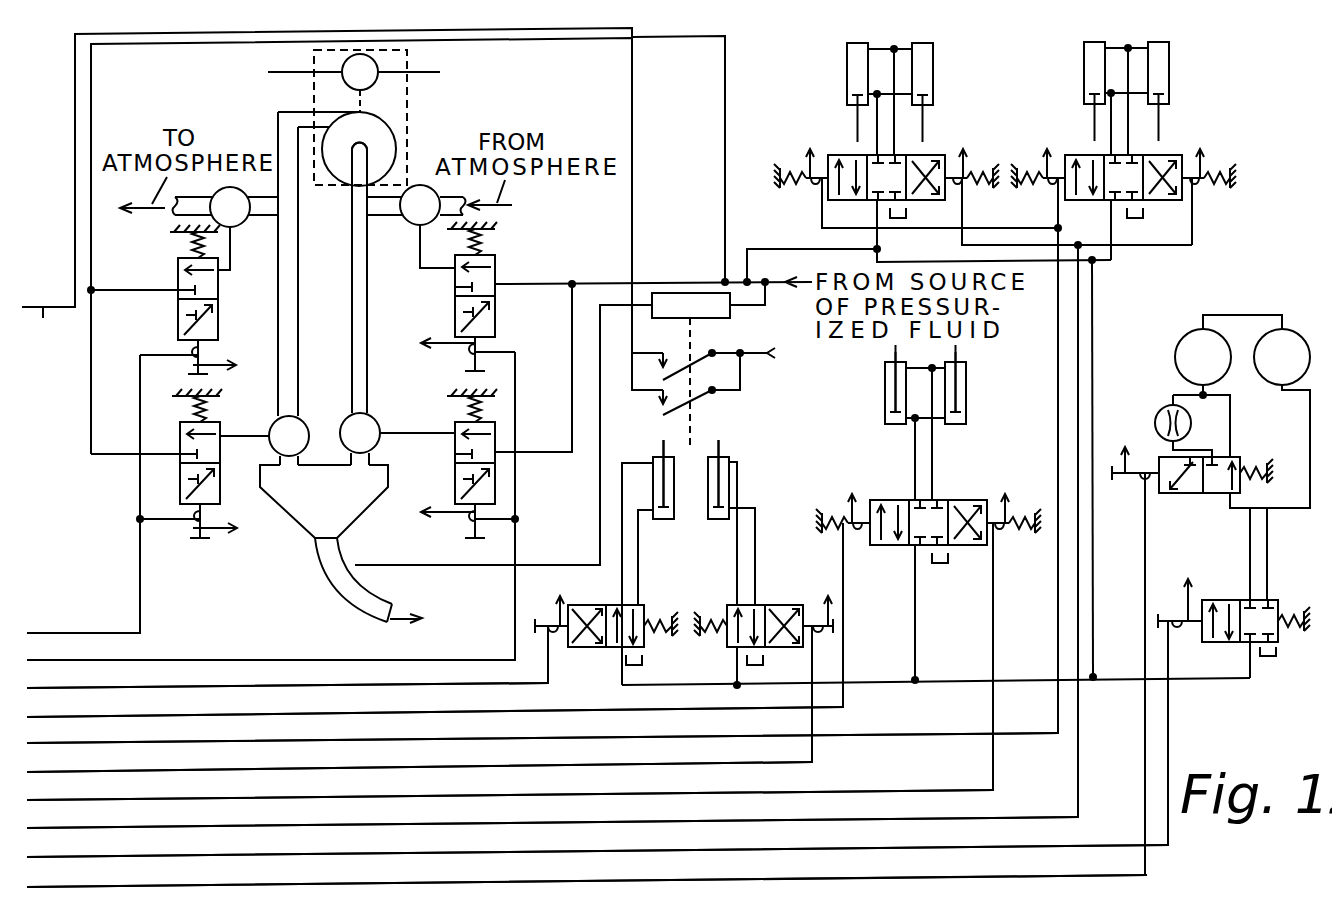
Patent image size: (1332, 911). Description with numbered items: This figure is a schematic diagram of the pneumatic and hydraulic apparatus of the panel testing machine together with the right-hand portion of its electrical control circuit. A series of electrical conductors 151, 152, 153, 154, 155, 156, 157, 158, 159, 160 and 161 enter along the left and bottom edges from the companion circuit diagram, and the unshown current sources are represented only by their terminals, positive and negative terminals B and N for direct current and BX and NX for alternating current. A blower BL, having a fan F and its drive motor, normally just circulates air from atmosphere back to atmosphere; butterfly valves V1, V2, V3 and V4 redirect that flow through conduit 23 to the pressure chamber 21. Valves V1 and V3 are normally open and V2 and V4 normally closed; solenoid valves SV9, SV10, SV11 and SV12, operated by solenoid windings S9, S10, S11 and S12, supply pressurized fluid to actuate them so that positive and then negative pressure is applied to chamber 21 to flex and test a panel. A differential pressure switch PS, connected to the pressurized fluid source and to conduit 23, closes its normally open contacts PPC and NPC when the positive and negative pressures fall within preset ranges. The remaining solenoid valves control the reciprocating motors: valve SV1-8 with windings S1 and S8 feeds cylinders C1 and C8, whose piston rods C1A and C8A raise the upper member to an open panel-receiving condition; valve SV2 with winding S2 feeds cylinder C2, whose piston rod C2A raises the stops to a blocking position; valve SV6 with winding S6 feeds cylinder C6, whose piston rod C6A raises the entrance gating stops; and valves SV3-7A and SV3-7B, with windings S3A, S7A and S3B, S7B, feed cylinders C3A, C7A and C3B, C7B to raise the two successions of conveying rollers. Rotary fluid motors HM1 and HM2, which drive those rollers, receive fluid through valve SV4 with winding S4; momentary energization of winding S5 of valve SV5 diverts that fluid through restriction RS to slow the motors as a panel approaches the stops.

The electrical conductor 151 is at (373, 191).
The electrical conductor 152 is at (104, 633).
The electrical conductor 153 is at (104, 660).
The electrical conductor 154 is at (104, 688).
The electrical conductor 155 is at (104, 717).
The electrical conductor 156 is at (104, 743).
The electrical conductor 157 is at (104, 772).
The electrical conductor 158 is at (104, 800).
The electrical conductor 159 is at (104, 828).
The electrical conductor 160 is at (106, 857).
The electrical conductor 161 is at (104, 887).
The pressure chamber 21 is at (401, 624).
The conduit 23 is at (350, 575).
The blower BL is at (407, 93).
The positive terminal of alternating current source BX is at (282, 72).
The negative terminal of alternating current source NX is at (430, 72).
The fan F is at (397, 145).
The compressed air flow control valve V1 is at (230, 228).
The compressed air flow control valve V2 is at (264, 440).
The compressed air flow control valve V3 is at (427, 226).
The compressed air flow control valve V4 is at (397, 439).
The solenoid actuated fluid-flow control valve SV9 is at (178, 320).
The solenoid winding S9 is at (202, 356).
The solenoid actuated fluid-flow control valve SV10 is at (222, 493).
The solenoid winding S10 is at (153, 542).
The solenoid actuated fluid-flow control valve SV11 is at (494, 318).
The solenoid winding S11 is at (480, 353).
The solenoid actuated fluid-flow control valve SV12 is at (455, 488).
The solenoid winding S12 is at (473, 523).
The differential pressure switch PS is at (560, 423).
The positive pressure contact PPC is at (696, 358).
The negative pressure contact NPC is at (714, 394).
The positive terminal of direct current source B is at (752, 365).
The fluid cylinder C6 is at (653, 458).
The piston rod C6A is at (690, 462).
The fluid cylinder C2 is at (730, 458).
The piston rod C2A is at (713, 483).
The solenoid actuated fluid-flow control valve SV6 is at (586, 648).
The solenoid winding S6 is at (553, 626).
The solenoid actuated fluid-flow control valve SV2 is at (733, 648).
The solenoid winding S2 is at (812, 620).
The fluid cylinder C1 is at (885, 393).
The piston rod C1A is at (885, 368).
The fluid cylinder C8 is at (966, 393).
The piston rod C8A is at (966, 368).
The solenoid actuated fluid-flow control valve SV1-8 is at (870, 545).
The solenoid winding S1 is at (850, 513).
The solenoid winding S8 is at (1000, 517).
The fluid cylinder C3A is at (847, 60).
The fluid cylinder C7A is at (933, 60).
The solenoid actuated fluid-flow control valve SV3-7A is at (850, 155).
The solenoid winding S3A is at (815, 184).
The solenoid winding S7A is at (960, 146).
The fluid cylinder C3B is at (1084, 68).
The fluid cylinder C7B is at (1169, 58).
The solenoid actuated fluid-flow control valve SV3-7B is at (1165, 155).
The solenoid winding S3B is at (1058, 148).
The solenoid winding S7B is at (1198, 192).
The rotary pressurized fluid driven motor HM1 is at (1227, 386).
The rotary pressurized fluid driven motor HM2 is at (1270, 503).
The restriction RS is at (1160, 415).
The solenoid actuated fluid-flow control valve SV5 is at (1178, 493).
The solenoid winding S5 is at (1140, 478).
The solenoid actuated fluid-flow control valve SV4 is at (1278, 642).
The solenoid winding S4 is at (1178, 630).
The negative terminal of direct current source N is at (700, 355).